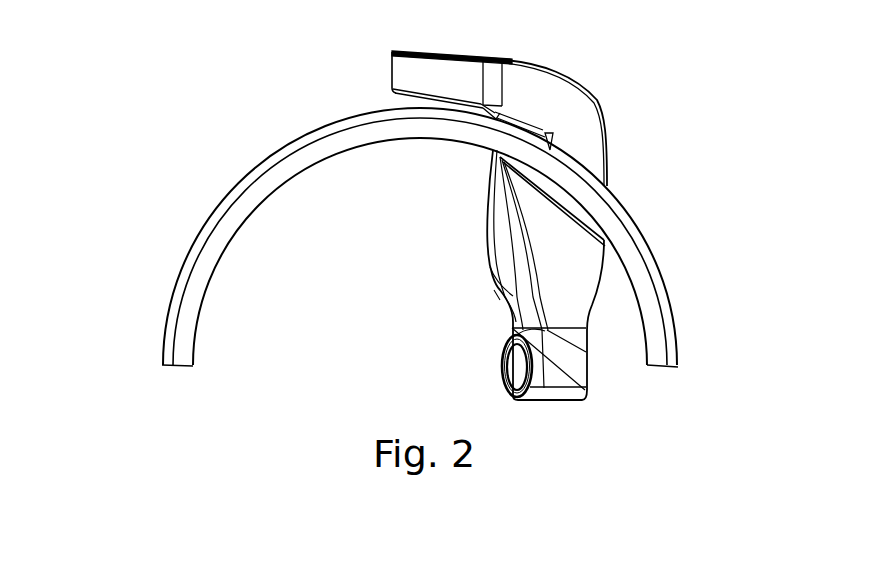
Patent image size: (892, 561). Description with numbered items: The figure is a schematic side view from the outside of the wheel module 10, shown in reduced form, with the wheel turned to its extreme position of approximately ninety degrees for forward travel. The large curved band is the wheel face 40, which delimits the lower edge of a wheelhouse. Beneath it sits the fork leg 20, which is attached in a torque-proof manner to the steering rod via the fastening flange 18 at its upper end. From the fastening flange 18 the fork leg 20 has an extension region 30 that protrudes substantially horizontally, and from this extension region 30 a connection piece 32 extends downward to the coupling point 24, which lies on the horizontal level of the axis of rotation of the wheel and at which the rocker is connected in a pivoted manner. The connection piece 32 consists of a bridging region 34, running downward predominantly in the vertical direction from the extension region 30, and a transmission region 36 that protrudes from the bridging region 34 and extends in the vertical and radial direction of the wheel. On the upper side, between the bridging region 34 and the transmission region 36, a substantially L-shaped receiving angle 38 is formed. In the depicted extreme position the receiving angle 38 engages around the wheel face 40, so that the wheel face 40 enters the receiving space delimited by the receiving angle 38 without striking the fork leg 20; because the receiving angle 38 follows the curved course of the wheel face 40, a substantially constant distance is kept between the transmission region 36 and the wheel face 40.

The wheel module 10 is at (170, 174).
The fastening flange 18 is at (412, 50).
The fork leg 20 is at (580, 68).
The coupling point 24 is at (502, 377).
The extension region 30 is at (457, 77).
The connection piece 32 is at (710, 138).
The bridging region 34 is at (593, 140).
The transmission region 36 is at (570, 228).
The receiving angle 38 is at (560, 147).
The wheel face 40 is at (660, 335).